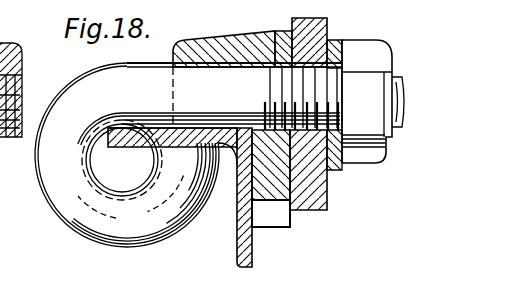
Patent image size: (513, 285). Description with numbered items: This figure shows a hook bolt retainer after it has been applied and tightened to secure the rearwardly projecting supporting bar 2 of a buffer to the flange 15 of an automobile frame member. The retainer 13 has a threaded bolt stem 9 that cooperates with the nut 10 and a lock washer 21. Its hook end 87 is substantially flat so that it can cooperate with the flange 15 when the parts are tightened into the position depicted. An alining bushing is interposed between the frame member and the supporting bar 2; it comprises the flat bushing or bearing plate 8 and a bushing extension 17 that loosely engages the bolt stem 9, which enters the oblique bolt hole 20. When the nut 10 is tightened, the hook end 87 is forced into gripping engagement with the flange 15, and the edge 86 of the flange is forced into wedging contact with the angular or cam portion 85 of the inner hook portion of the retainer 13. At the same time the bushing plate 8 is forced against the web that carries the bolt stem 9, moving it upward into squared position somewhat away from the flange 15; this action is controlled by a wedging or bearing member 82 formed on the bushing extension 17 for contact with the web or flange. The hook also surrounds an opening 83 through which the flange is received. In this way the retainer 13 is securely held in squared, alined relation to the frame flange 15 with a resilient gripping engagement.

The rearwardly projecting supporting bar 2 is at (318, 22).
The flat bushing or bearing plate 8 is at (293, 222).
The threaded bolt stem 9 is at (345, 42).
The nut 10 is at (377, 153).
The retainer 13 is at (42, 186).
The flange 15 is at (130, 140).
The bushing extension 17 is at (246, 33).
The oblique bolt hole 20 is at (287, 32).
The lock washer 21 is at (331, 160).
The wedging or bearing member 82 is at (227, 150).
The opening 83 is at (106, 188).
The angular or cam portion 85 is at (148, 125).
The edge 86 is at (105, 125).
The hook end 87 is at (183, 140).